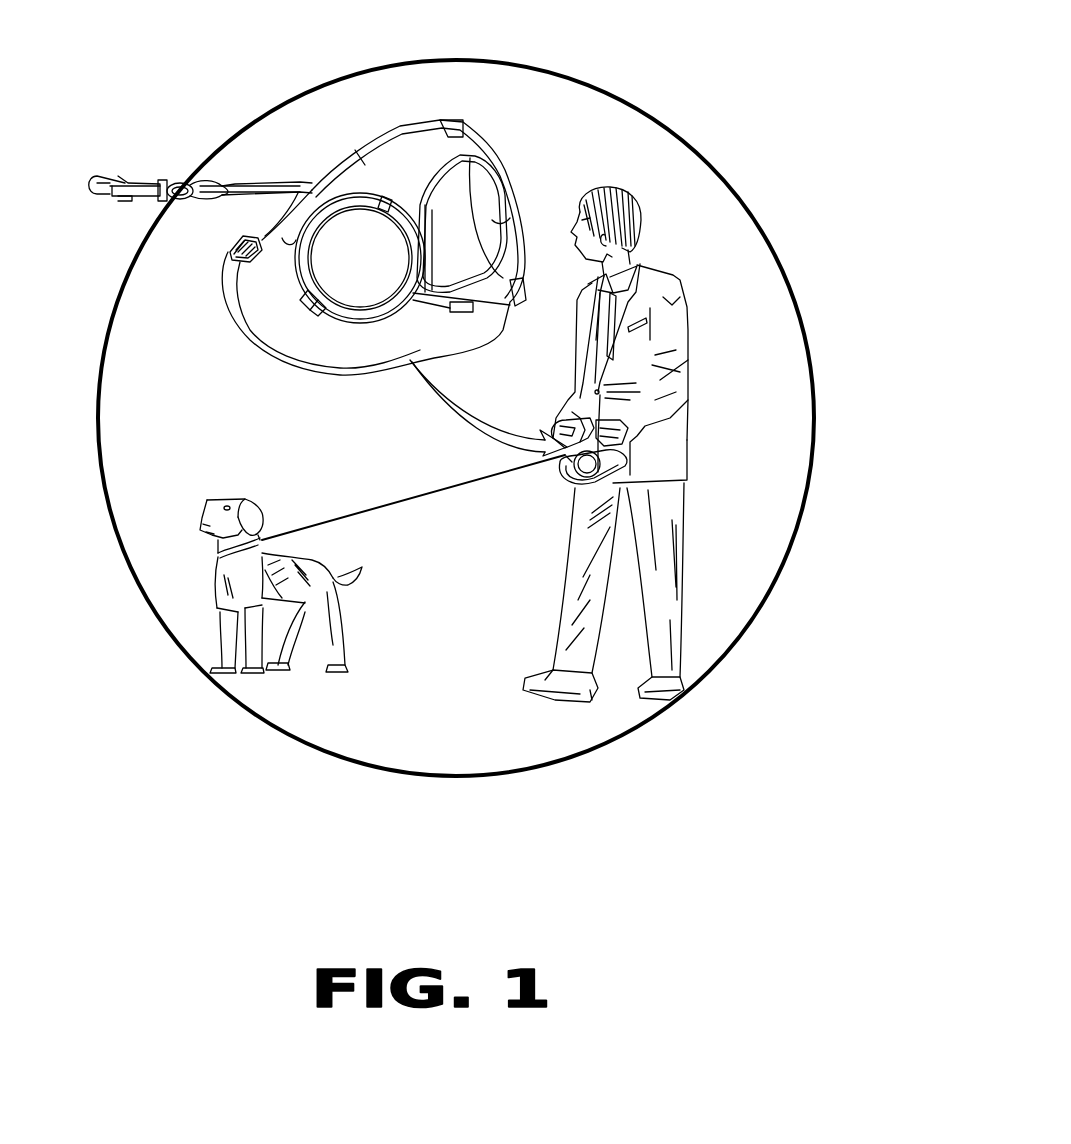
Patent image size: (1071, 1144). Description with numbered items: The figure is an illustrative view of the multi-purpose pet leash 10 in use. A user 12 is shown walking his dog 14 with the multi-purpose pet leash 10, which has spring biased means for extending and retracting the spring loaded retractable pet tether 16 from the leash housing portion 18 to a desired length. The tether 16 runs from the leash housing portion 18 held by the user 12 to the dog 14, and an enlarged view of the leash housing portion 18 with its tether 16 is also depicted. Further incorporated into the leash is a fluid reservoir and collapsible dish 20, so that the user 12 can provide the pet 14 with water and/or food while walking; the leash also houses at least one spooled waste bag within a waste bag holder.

The multi-purpose pet leash 10 is at (497, 93).
The user 12 is at (607, 185).
The dog 14 is at (266, 537).
The spring loaded retractable pet tether 16 is at (270, 178).
The leash housing portion 18 is at (388, 165).
The fluid reservoir and collapsible dish 20 is at (522, 302).